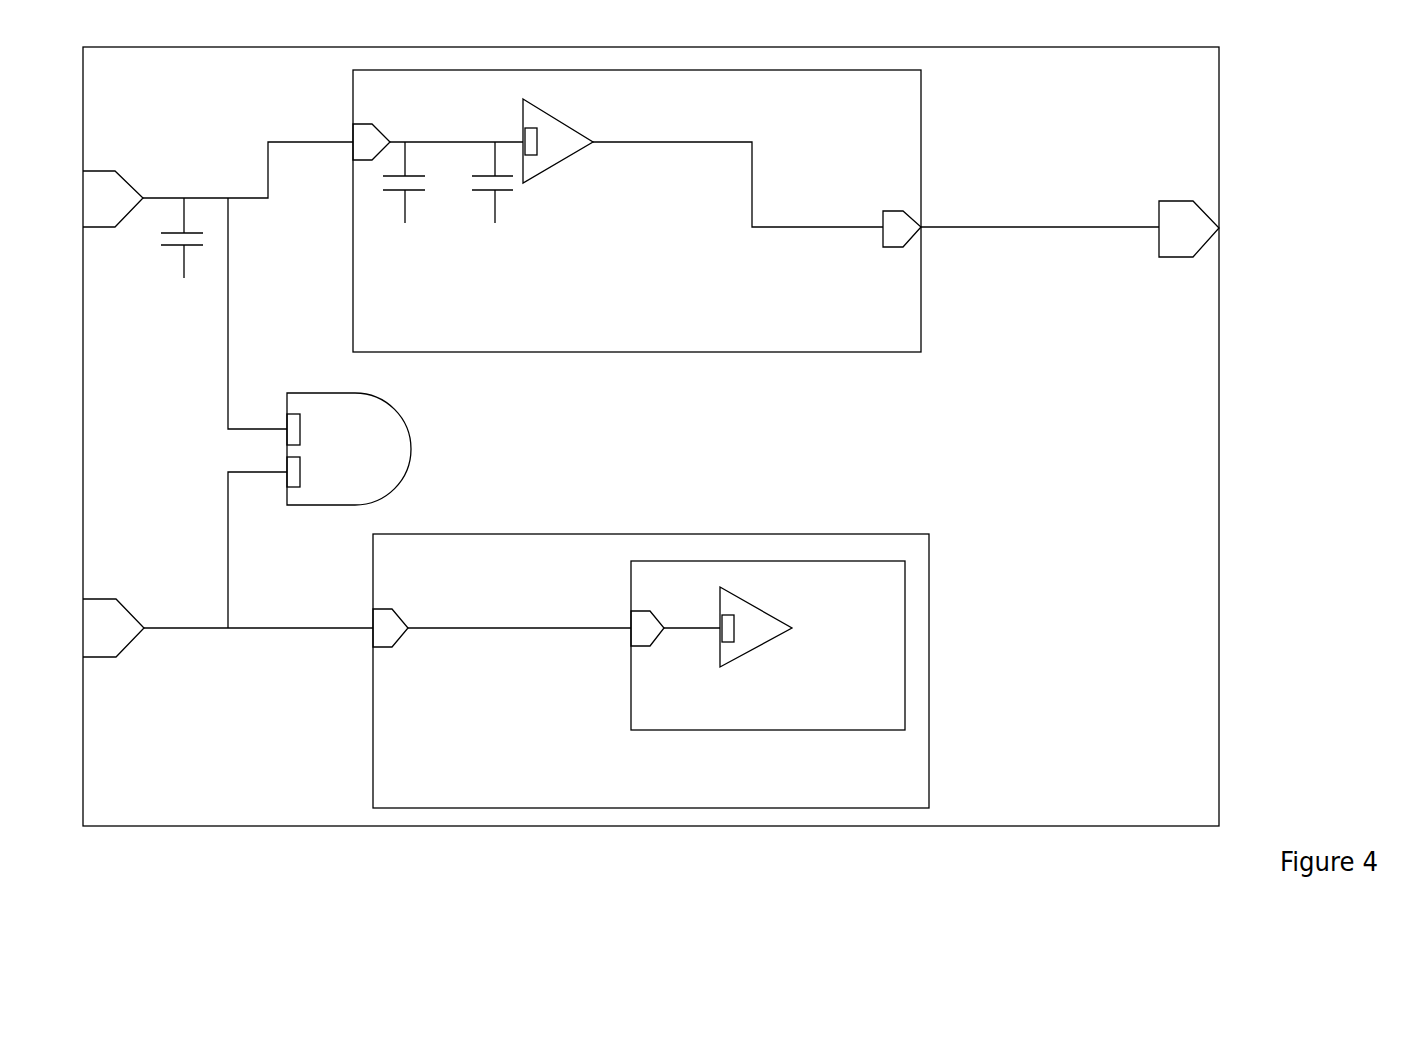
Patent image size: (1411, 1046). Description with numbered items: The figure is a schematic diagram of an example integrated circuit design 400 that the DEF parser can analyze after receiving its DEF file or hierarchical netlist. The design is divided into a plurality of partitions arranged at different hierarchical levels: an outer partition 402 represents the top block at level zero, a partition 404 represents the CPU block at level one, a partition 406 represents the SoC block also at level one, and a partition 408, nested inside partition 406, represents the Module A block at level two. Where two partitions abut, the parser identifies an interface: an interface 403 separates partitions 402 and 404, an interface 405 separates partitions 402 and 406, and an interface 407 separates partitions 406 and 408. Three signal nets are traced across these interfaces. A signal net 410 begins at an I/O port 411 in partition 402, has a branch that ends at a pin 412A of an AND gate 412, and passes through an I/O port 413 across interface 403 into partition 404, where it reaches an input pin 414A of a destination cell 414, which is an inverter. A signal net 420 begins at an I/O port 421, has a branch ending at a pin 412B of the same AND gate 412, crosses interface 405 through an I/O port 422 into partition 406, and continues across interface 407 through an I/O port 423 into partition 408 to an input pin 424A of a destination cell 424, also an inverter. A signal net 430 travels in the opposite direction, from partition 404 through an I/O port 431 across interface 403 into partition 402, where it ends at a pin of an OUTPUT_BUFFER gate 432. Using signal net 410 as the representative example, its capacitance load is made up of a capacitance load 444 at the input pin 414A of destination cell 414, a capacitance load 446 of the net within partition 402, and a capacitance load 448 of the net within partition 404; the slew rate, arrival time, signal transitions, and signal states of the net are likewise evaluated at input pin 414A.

The integrated circuit design 400 is at (736, 436).
The partition 402 is at (651, 436).
The interface 403 is at (637, 256).
The partition 404 is at (565, 352).
The interface 405 is at (651, 626).
The partition 406 is at (651, 671).
The interface 407 is at (706, 666).
The partition 408 is at (768, 645).
The signal net 410 is at (215, 195).
The I/O port 411 is at (229, 285).
The AND gate 412 is at (371, 449).
The pin 412A is at (321, 429).
The pin 412B is at (321, 471).
The I/O port 413 is at (438, 131).
The destination cell 414 is at (564, 154).
The input pin 414A is at (538, 147).
The signal net 420 is at (186, 629).
The I/O port 421 is at (122, 616).
The I/O port 422 is at (502, 646).
The I/O port 423 is at (675, 615).
The destination cell 424 is at (773, 632).
The input pin 424A is at (726, 642).
The signal net 430 is at (762, 225).
The I/O port 431 is at (1012, 214).
The OUTPUT_BUFFER gate 432 is at (1188, 213).
The capacitance load 444 is at (492, 197).
The capacitance load 446 is at (182, 253).
The capacitance load 448 is at (401, 197).